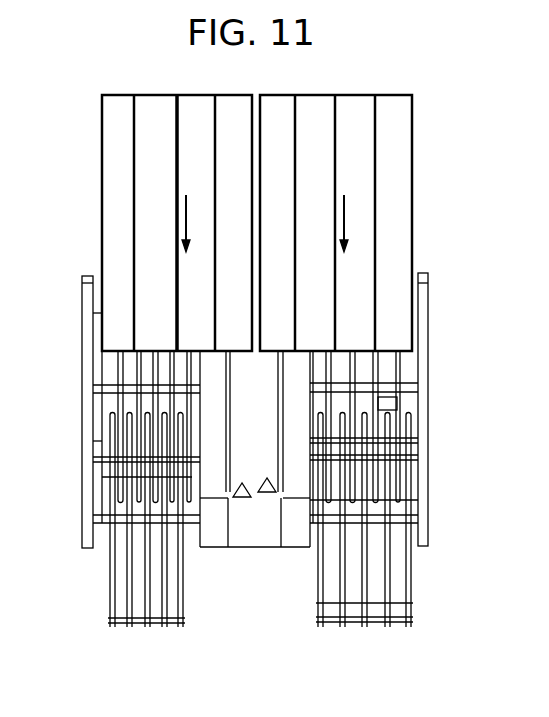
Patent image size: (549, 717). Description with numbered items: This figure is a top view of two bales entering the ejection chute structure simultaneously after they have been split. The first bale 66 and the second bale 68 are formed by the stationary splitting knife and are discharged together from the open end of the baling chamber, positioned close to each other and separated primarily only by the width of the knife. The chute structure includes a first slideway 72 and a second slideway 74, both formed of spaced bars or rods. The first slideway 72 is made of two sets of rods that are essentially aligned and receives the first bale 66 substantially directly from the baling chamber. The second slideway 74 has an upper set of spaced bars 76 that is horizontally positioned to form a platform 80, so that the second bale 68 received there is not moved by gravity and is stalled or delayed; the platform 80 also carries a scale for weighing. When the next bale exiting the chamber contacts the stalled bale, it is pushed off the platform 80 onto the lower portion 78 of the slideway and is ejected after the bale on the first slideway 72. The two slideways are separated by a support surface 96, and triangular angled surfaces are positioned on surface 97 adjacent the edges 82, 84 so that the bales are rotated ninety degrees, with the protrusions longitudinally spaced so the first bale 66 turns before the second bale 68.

The first bale 66 is at (101, 157).
The second bale 68 is at (413, 151).
The first slideway 72 is at (100, 433).
The second slideway 74 is at (410, 433).
The upper set of spaced bars 76 is at (154, 505).
The lower portion of the slideway 78 is at (388, 505).
The platform 80 is at (408, 355).
The edge 82 is at (228, 471).
The edge 84 is at (310, 471).
The support surface 96 is at (258, 552).
The surface 97 is at (268, 471).